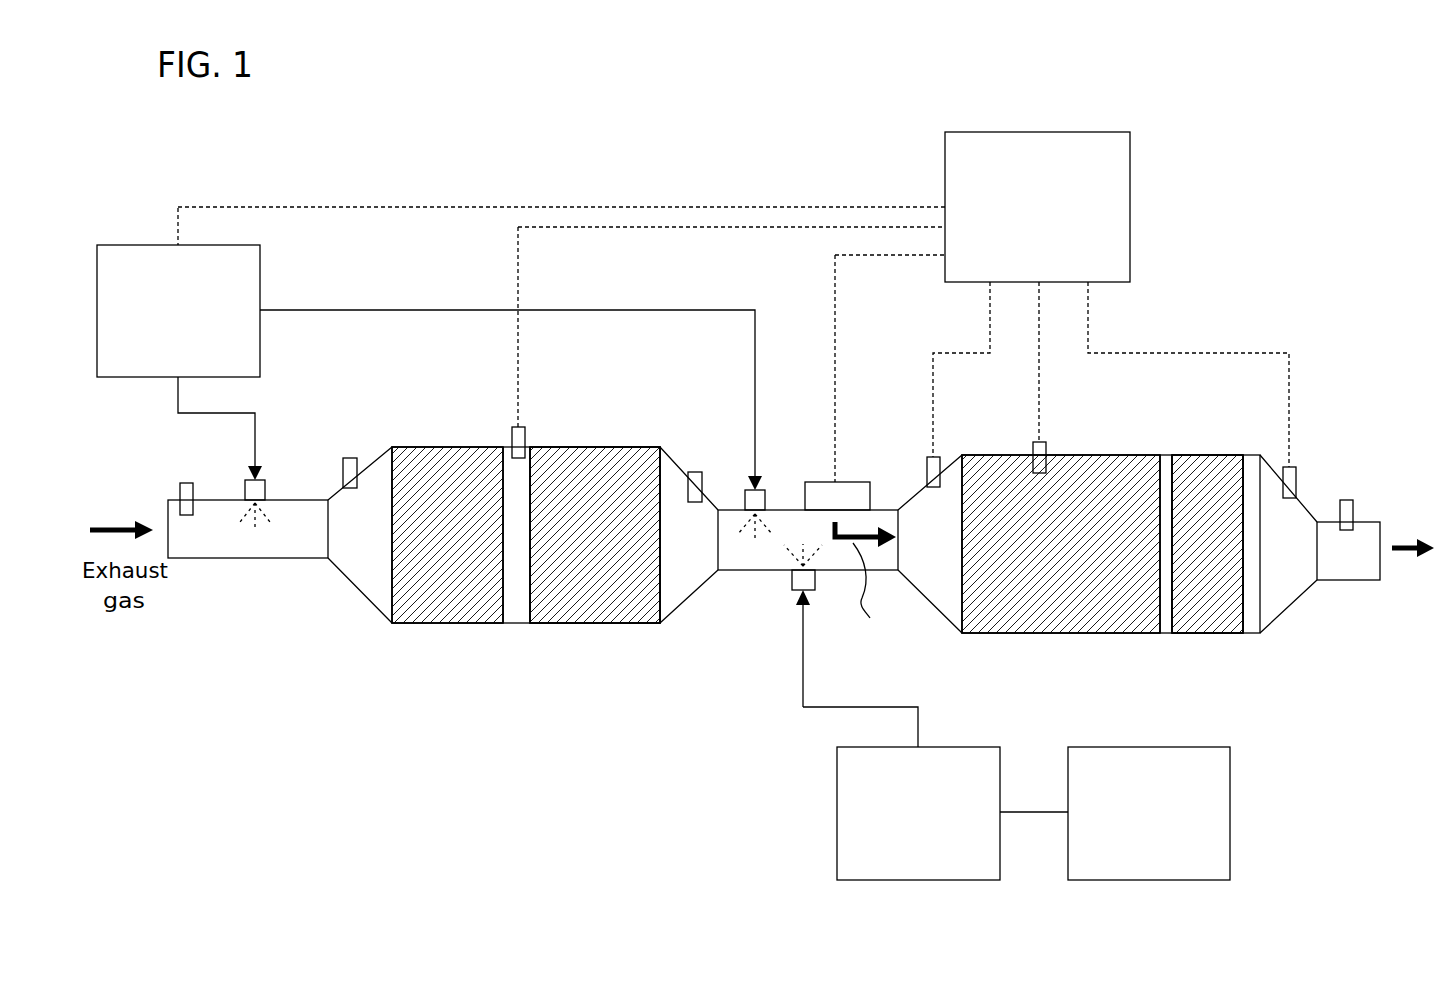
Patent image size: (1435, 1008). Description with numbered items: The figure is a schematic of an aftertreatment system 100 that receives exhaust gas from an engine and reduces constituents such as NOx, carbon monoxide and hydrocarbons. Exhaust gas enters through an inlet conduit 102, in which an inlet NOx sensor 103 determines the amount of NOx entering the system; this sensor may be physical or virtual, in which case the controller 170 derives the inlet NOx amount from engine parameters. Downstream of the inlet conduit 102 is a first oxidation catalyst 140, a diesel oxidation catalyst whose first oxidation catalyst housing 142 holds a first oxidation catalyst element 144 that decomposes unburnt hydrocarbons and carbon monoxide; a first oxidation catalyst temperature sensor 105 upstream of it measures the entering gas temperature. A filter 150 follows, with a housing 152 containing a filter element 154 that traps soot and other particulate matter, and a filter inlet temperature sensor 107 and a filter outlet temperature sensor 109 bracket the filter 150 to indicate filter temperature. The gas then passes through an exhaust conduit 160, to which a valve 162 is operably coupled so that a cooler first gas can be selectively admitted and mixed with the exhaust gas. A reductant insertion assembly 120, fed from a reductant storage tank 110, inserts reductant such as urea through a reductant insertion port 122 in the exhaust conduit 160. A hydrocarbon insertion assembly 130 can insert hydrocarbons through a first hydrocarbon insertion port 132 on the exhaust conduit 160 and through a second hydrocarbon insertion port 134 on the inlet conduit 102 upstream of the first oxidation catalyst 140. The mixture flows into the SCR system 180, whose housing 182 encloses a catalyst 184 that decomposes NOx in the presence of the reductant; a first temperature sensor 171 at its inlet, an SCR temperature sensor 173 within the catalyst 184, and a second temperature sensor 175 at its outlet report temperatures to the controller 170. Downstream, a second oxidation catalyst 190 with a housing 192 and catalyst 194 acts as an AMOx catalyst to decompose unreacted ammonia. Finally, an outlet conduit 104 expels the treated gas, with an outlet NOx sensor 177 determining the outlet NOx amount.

The aftertreatment system 100 is at (1198, 189).
The inlet conduit 102 is at (254, 558).
The inlet NOx sensor 103 is at (187, 483).
The outlet conduit 104 is at (1360, 574).
The first oxidation catalyst temperature sensor 105 is at (351, 458).
The filter inlet temperature sensor 107 is at (524, 440).
The filter outlet temperature sensor 109 is at (697, 472).
The reductant storage tank 110 is at (1129, 868).
The reductant insertion assembly 120 is at (898, 868).
The reductant insertion port 122 is at (798, 592).
The hydrocarbon insertion assembly 130 is at (158, 366).
The first hydrocarbon insertion port 132 is at (765, 500).
The second hydrocarbon insertion port 134 is at (265, 490).
The first oxidation catalyst 140 is at (412, 636).
The first oxidation catalyst housing 142 is at (440, 623).
The first oxidation catalyst element 144 is at (487, 623).
The filter 150 is at (574, 636).
The housing 152 is at (600, 623).
The filter element 154 is at (648, 618).
The exhaust conduit 160 is at (742, 570).
The valve 162 is at (862, 482).
The controller 170 is at (1017, 234).
The first temperature sensor 171 is at (940, 470).
The SCR temperature sensor 173 is at (1046, 455).
The second temperature sensor 175 is at (1296, 478).
The outlet NOx sensor 177 is at (1353, 508).
The SCR system 180 is at (1031, 646).
The housing 182 is at (1070, 633).
The catalyst 184 is at (1130, 590).
The second oxidation catalyst 190 is at (1202, 648).
The housing 192 is at (1222, 633).
The catalyst 194 is at (1227, 600).